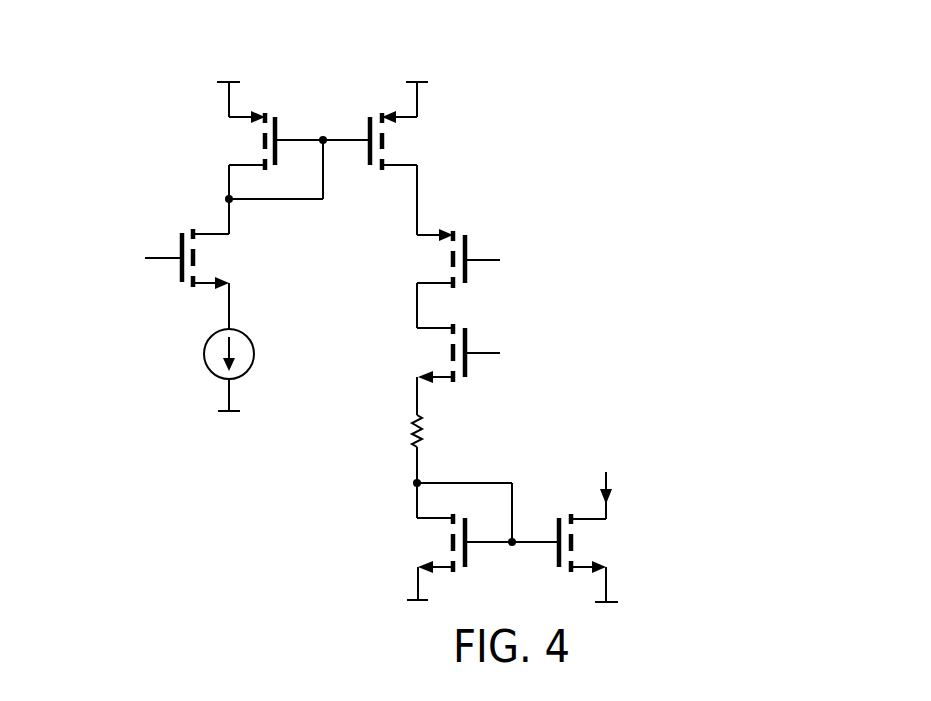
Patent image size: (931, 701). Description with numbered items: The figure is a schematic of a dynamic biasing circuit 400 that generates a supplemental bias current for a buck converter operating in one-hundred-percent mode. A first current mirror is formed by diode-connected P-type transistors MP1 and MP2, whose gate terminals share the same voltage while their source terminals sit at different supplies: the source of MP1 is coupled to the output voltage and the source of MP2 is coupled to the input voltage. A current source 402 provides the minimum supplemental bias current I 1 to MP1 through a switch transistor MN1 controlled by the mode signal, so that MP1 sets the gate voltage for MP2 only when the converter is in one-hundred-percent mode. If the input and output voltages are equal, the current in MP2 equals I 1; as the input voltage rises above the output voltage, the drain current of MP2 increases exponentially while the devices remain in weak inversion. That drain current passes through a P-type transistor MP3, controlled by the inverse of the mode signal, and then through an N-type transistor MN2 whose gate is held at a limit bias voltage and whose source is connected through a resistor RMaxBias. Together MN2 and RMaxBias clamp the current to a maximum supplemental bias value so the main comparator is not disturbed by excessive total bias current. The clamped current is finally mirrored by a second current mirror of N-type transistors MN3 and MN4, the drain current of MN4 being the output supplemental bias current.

The dynamic biasing circuit 400 is at (552, 58).
The current source 402 is at (213, 370).
The minimum supplemental bias current 1 is at (253, 357).
The P-type transistor MP1 is at (233, 140).
The P-type transistor MP2 is at (413, 140).
The P-type transistor MP3 is at (421, 258).
The switch transistor MN1 is at (225, 259).
The N-type transistor MN2 is at (421, 353).
The N-type transistor MN3 is at (421, 543).
The N-type transistor MN4 is at (603, 543).
The resistor RMaxBias is at (368, 434).